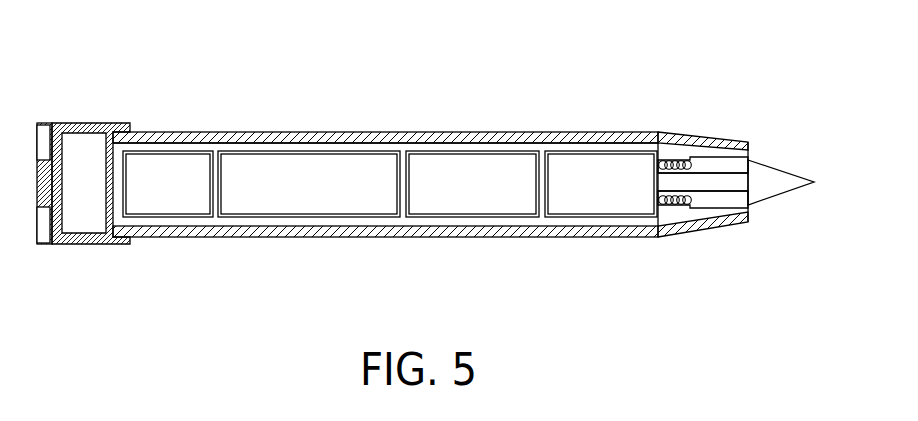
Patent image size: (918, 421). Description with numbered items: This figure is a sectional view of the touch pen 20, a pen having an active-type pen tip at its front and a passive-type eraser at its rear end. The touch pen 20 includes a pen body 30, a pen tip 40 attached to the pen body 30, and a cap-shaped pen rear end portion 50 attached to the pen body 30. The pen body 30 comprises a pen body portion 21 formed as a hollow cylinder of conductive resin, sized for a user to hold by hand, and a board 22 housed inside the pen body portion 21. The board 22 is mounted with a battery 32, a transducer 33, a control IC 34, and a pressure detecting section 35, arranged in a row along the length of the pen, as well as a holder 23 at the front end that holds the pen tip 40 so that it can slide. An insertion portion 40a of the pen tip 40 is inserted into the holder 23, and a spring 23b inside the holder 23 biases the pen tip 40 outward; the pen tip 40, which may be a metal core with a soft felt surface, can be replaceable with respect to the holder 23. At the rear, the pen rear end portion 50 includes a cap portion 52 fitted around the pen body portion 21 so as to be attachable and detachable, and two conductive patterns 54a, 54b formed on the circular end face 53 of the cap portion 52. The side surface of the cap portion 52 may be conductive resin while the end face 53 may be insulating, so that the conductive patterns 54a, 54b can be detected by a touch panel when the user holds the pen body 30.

The touch pen 20 is at (318, 80).
The pen body portion 21 is at (202, 132).
The board 22 is at (403, 132).
The holder 23 is at (702, 213).
The spring 23b is at (668, 208).
The pen body 30 is at (257, 132).
The battery 32 is at (165, 218).
The transducer 33 is at (328, 218).
The control IC 34 is at (497, 218).
The pressure detecting section 35 is at (613, 218).
The pen tip 40 is at (780, 178).
The insertion portion 40a is at (718, 183).
The pen rear end portion 50 is at (95, 116).
The cap portion 52 is at (97, 244).
The end face 53 is at (37, 176).
The conductive pattern 54a is at (43, 241).
The conductive pattern 54b is at (43, 130).